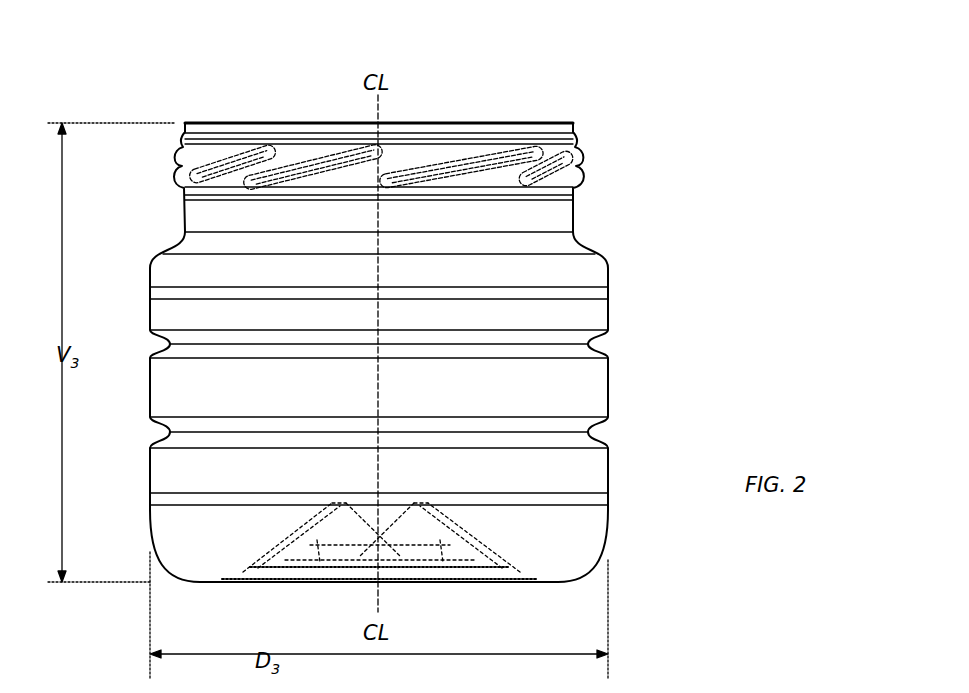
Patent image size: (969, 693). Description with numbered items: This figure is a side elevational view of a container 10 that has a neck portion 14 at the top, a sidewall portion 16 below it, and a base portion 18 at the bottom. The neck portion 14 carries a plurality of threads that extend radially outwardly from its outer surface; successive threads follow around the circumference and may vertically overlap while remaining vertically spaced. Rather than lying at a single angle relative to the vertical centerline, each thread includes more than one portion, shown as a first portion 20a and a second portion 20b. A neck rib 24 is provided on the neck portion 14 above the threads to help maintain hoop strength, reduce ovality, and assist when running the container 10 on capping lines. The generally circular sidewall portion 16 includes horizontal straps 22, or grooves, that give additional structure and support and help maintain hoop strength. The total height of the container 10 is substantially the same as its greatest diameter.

The container 10 is at (693, 73).
The neck portion 14 is at (585, 122).
The sidewall portion 16 is at (622, 195).
The base portion 18 is at (622, 508).
The first portion 20a is at (210, 160).
The second portion 20b is at (265, 148).
The horizontal straps 22 is at (160, 343).
The neck rib 24 is at (574, 123).